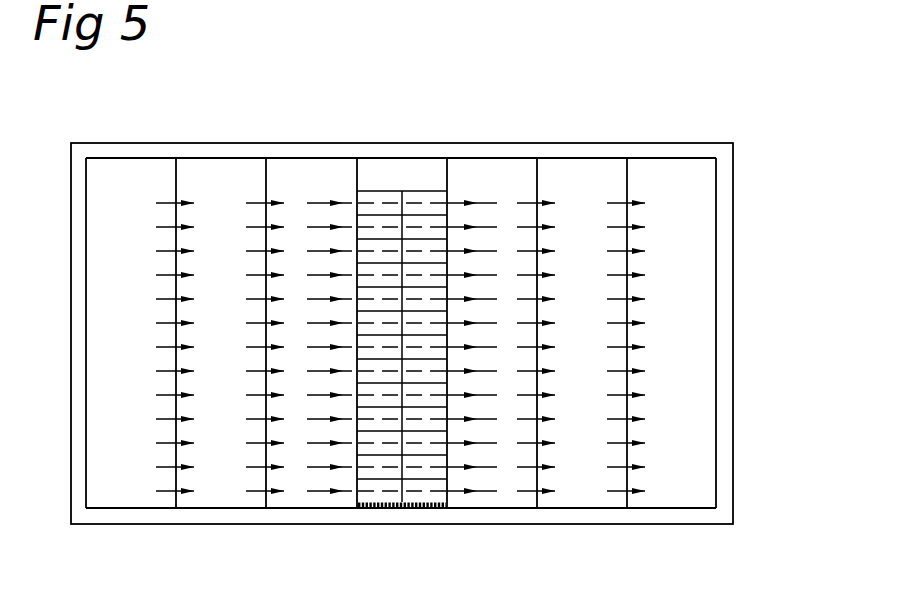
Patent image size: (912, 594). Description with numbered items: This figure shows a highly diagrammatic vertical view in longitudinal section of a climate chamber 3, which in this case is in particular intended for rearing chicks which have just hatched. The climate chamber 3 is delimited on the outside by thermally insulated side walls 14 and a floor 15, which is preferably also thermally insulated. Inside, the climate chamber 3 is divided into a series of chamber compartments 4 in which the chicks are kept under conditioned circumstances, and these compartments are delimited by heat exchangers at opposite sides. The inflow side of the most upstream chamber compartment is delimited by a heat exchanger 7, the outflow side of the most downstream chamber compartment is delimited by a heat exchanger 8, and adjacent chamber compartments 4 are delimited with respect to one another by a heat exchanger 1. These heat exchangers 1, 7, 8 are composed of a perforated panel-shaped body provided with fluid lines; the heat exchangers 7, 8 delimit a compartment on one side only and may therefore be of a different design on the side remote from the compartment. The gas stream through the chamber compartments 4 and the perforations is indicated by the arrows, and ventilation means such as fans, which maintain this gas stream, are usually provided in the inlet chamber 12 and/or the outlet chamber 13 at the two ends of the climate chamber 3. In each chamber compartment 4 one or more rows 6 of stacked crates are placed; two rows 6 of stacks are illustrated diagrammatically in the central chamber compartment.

The climate chamber 3 is at (748, 111).
The heat exchanger 1 is at (267, 178).
The chamber compartment 4 is at (236, 177).
The row of stacked crates 6 is at (412, 510).
The heat exchanger 7 is at (177, 178).
The heat exchanger 8 is at (627, 178).
The inlet chamber 12 is at (690, 178).
The outlet chamber 13 is at (132, 177).
The side wall 14 is at (78, 363).
The floor 15 is at (110, 150).